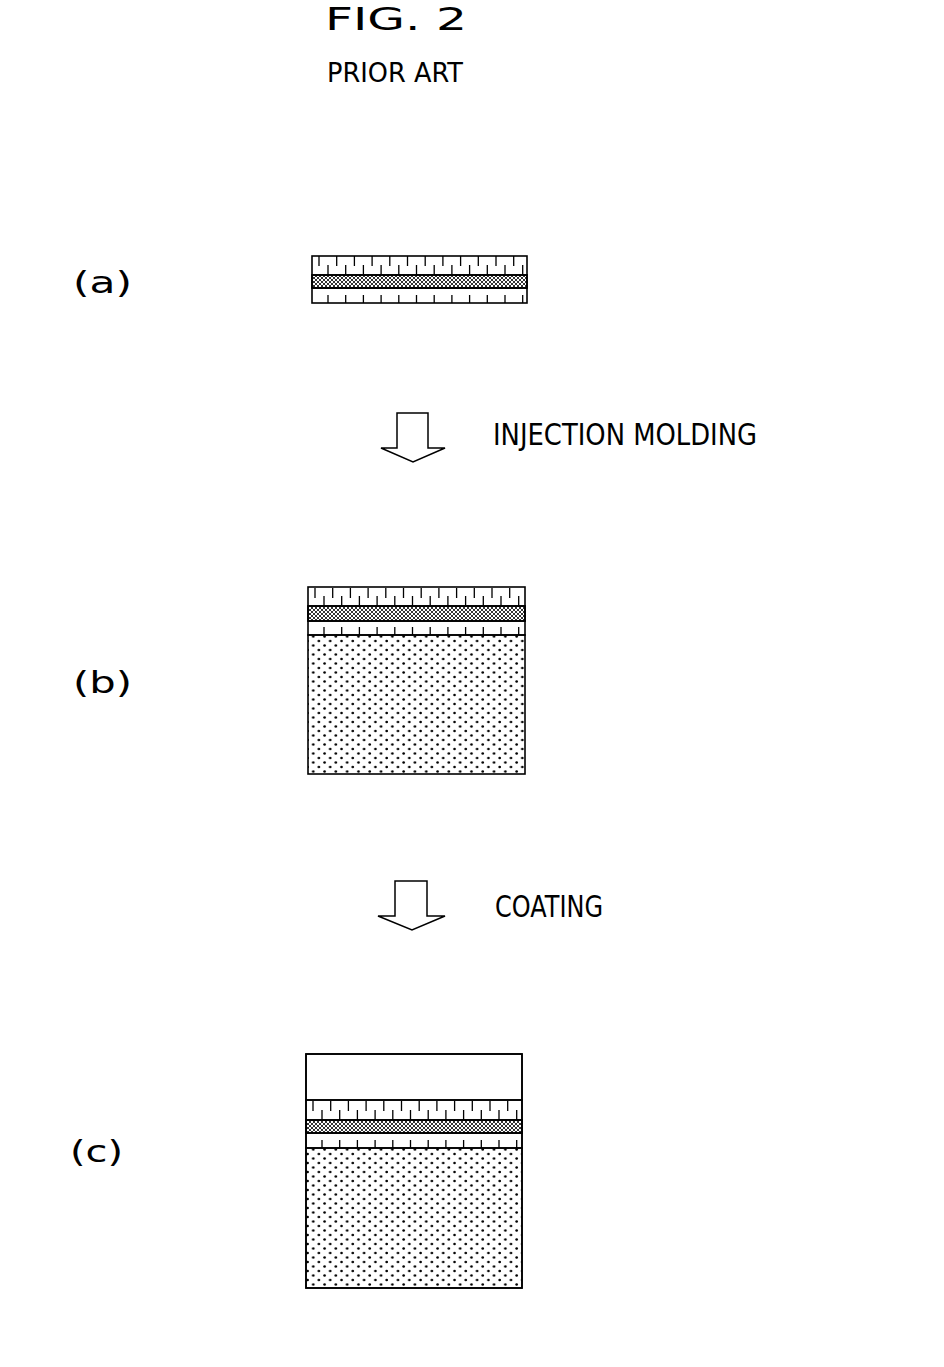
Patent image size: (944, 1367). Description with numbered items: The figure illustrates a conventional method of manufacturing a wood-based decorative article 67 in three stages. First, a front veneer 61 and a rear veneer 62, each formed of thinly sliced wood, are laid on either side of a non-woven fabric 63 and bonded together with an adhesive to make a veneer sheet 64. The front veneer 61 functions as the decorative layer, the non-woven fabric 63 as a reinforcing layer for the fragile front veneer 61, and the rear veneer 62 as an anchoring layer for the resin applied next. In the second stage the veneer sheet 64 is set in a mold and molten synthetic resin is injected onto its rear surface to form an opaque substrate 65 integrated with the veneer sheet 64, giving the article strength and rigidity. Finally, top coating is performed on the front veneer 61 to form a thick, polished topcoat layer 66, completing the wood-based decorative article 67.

The front veneer 61 is at (505, 261).
The rear veneer 62 is at (517, 298).
The non-woven fabric 63 is at (527, 279).
The veneer sheet 64 is at (334, 236).
The substrate 65 is at (313, 702).
The topcoat layer 66 is at (315, 1078).
The wood-based decorative article 67 is at (476, 1034).